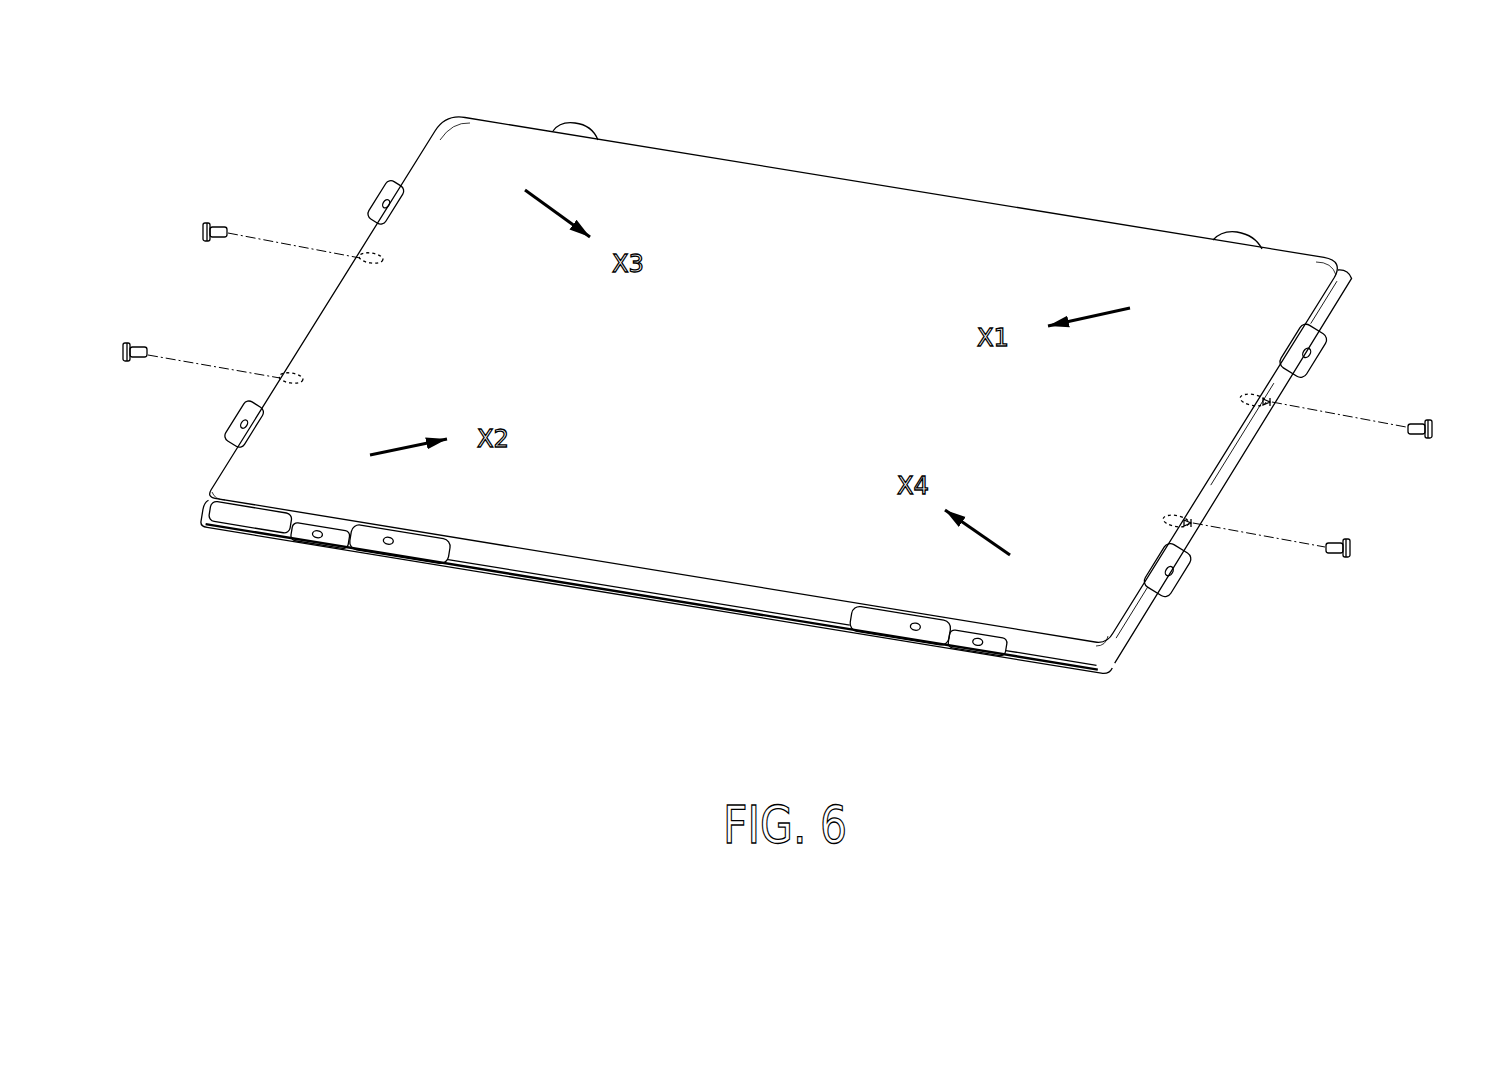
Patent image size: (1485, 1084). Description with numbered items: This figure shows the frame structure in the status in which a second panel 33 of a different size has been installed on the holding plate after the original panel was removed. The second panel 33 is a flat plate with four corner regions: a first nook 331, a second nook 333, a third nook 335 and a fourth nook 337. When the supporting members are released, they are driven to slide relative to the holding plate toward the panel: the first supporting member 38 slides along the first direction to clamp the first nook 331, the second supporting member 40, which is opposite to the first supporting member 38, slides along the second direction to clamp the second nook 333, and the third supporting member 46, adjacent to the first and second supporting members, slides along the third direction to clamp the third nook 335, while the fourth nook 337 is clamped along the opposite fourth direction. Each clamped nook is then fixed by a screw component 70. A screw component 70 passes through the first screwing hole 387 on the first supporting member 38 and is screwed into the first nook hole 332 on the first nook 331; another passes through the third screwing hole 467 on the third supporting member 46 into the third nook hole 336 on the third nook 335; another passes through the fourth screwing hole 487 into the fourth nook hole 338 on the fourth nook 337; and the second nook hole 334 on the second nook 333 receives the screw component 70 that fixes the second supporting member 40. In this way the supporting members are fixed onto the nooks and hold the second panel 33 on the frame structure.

The second panel 33 is at (921, 167).
The first nook 331 is at (1310, 270).
The first nook hole 332 is at (1247, 393).
The second nook 333 is at (226, 488).
The second nook hole 334 is at (311, 377).
The third nook 335 is at (461, 135).
The third nook hole 336 is at (390, 258).
The fourth nook 337 is at (1100, 670).
The fourth nook hole 338 is at (1168, 513).
The first supporting member 38 is at (1358, 288).
The first screwing hole 387 is at (1273, 411).
The second supporting member 40 is at (268, 560).
The third supporting member 46 is at (418, 140).
The third screwing hole 467 is at (353, 244).
The fourth screwing hole 487 is at (1193, 531).
The screw component 70 is at (210, 224).